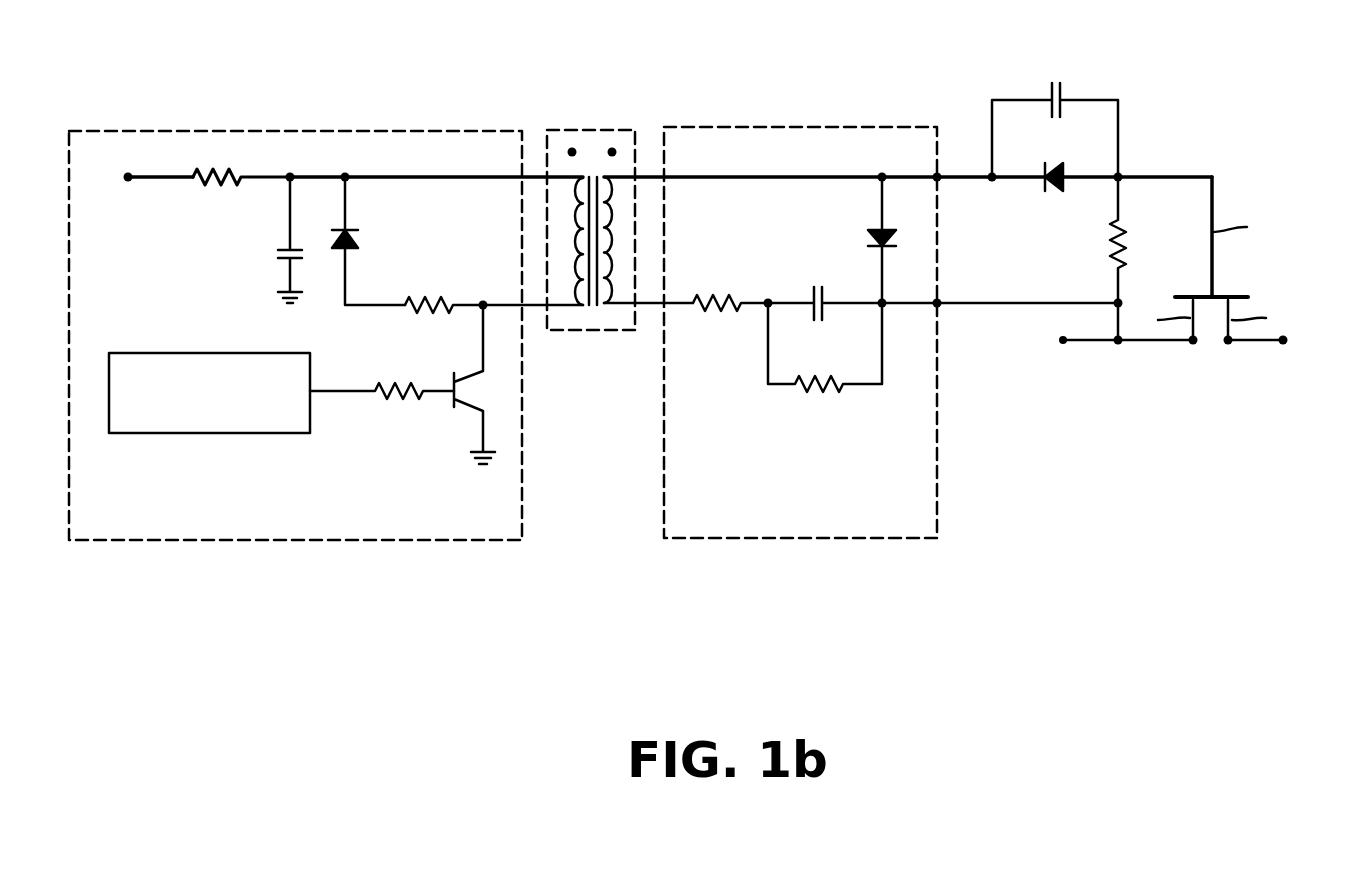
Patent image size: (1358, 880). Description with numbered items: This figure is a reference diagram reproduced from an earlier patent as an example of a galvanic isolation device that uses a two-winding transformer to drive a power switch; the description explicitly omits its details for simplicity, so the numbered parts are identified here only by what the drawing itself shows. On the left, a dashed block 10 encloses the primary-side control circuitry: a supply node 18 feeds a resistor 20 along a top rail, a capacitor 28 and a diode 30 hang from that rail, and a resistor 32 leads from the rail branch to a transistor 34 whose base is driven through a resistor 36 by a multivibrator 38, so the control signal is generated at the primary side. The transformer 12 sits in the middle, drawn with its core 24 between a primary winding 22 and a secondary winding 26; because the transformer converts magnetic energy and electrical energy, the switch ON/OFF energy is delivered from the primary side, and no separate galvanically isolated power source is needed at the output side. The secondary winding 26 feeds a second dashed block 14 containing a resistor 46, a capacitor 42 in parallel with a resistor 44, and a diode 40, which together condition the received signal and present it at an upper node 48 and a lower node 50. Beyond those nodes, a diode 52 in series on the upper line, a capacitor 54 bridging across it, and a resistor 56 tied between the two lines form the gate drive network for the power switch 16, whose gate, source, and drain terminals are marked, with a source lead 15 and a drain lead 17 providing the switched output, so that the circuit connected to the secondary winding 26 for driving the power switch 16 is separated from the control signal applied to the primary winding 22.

The oscillator/driver circuit block 10 is at (297, 131).
The transformer 12 is at (563, 128).
The rectifier/filter circuit block 14 is at (905, 127).
The source terminal lead 15 is at (1063, 340).
The MOSFET switch 16 is at (1243, 297).
The drain terminal lead 17 is at (1283, 340).
The supply voltage node +V 18 is at (128, 177).
The resistor 20 is at (203, 190).
The primary winding 22 is at (580, 308).
The transformer core 24 is at (598, 148).
The secondary winding 26 is at (612, 306).
The capacitor 28 is at (283, 255).
The diode 30 is at (356, 232).
The resistor 32 is at (429, 296).
The transistor 34 is at (452, 410).
The resistor 36 is at (372, 400).
The multivibrator 38 is at (160, 353).
The diode 40 is at (871, 229).
The capacitor 42 is at (806, 296).
The resistor 44 is at (800, 392).
The resistor 46 is at (704, 296).
The output node 48 is at (940, 175).
The output node 50 is at (940, 306).
The diode 52 is at (1051, 190).
The capacitor 54 is at (1062, 92).
The resistor 56 is at (1110, 268).